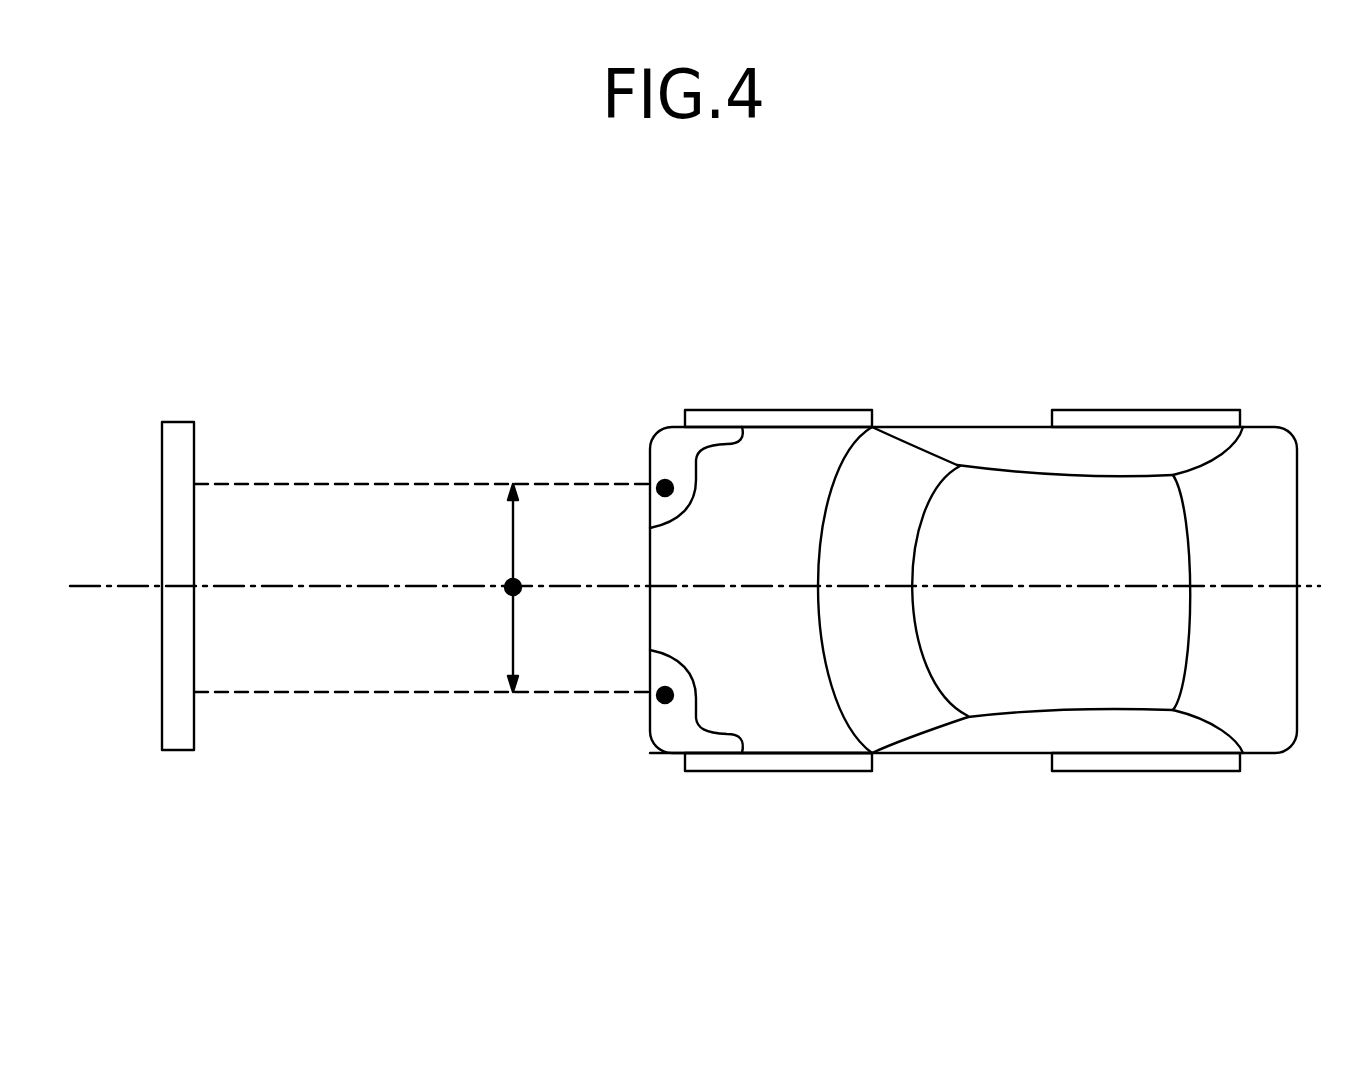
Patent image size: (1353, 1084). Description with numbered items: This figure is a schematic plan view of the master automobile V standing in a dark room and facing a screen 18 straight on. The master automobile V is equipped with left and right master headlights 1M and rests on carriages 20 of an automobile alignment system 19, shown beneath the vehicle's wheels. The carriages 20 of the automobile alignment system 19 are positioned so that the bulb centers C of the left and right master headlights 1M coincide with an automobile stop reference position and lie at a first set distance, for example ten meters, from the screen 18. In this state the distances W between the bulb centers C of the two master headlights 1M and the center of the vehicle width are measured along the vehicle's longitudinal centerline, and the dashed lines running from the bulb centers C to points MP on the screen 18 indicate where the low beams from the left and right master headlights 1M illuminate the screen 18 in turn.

The screen 18 is at (162, 562).
The measurement point MP is at (197, 483).
The distance between bulb center and center of vehicle width W is at (510, 547).
The bulb center C is at (665, 488).
The master headlight 1M is at (703, 445).
The master automobile V is at (1042, 613).
The automobile alignment system 19 is at (833, 788).
The carriage 20 is at (795, 772).